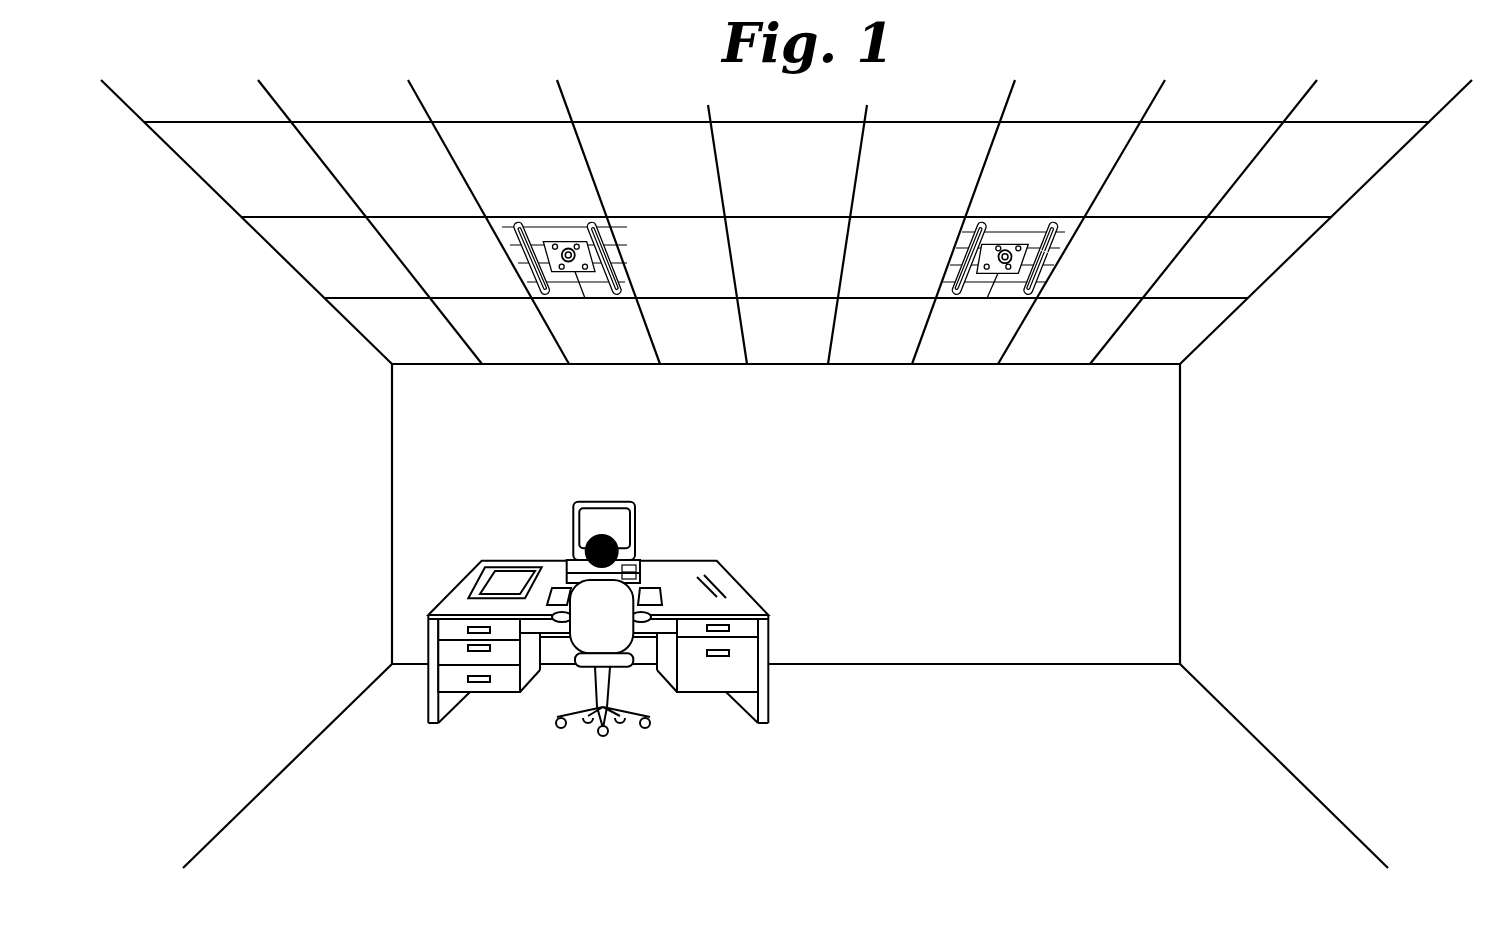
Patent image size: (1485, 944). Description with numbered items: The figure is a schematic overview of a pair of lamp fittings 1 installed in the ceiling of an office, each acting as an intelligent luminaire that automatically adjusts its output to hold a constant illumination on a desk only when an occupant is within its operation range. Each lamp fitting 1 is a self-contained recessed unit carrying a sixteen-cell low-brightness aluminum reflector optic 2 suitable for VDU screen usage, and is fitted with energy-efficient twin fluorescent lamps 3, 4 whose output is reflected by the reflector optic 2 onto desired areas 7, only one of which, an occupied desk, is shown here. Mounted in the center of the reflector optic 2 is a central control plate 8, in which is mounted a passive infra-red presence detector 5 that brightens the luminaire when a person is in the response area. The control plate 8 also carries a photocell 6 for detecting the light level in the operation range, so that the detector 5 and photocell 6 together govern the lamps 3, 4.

The lamp fitting 1 is at (803, 232).
The reflector optic 2 is at (1040, 282).
The fluorescent lamp 3 is at (1052, 250).
The fluorescent lamp 4 is at (968, 253).
The passive infra-red presence detector 5 is at (1008, 227).
The photocell 6 is at (998, 246).
The desired area 7 is at (752, 553).
The central control plate 8 is at (566, 242).